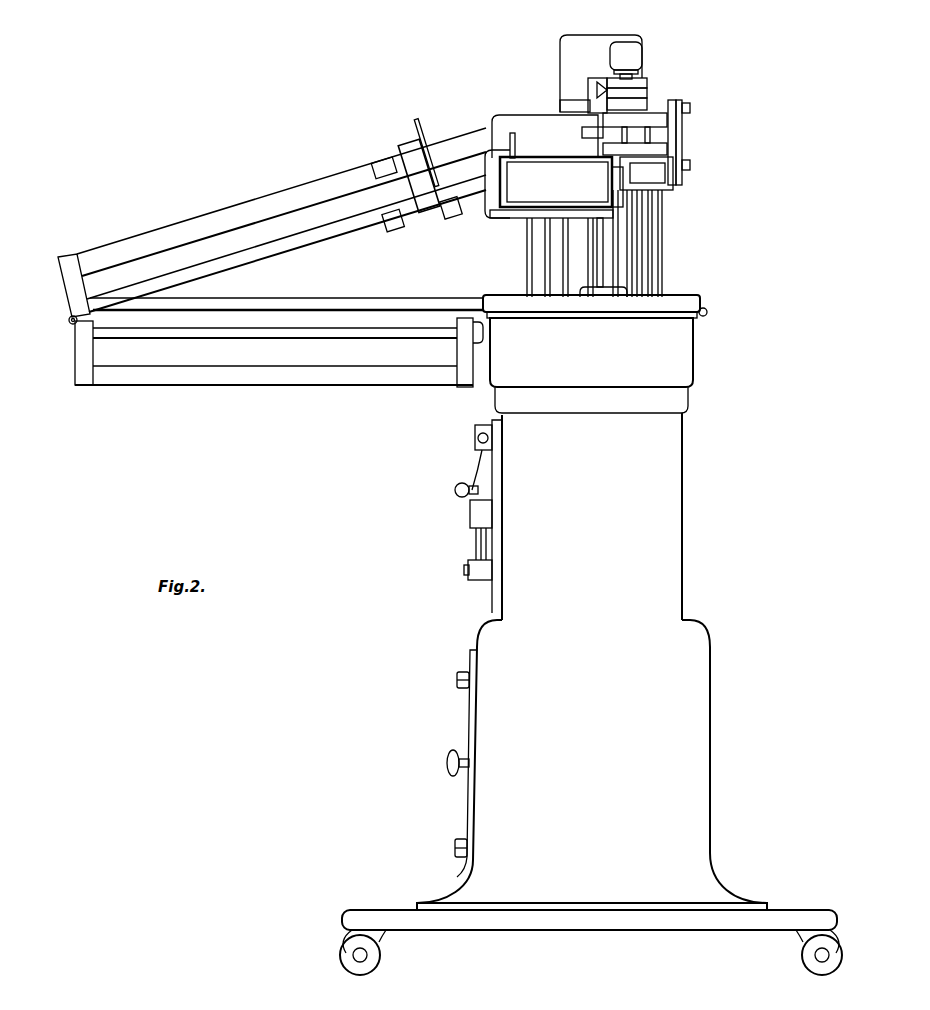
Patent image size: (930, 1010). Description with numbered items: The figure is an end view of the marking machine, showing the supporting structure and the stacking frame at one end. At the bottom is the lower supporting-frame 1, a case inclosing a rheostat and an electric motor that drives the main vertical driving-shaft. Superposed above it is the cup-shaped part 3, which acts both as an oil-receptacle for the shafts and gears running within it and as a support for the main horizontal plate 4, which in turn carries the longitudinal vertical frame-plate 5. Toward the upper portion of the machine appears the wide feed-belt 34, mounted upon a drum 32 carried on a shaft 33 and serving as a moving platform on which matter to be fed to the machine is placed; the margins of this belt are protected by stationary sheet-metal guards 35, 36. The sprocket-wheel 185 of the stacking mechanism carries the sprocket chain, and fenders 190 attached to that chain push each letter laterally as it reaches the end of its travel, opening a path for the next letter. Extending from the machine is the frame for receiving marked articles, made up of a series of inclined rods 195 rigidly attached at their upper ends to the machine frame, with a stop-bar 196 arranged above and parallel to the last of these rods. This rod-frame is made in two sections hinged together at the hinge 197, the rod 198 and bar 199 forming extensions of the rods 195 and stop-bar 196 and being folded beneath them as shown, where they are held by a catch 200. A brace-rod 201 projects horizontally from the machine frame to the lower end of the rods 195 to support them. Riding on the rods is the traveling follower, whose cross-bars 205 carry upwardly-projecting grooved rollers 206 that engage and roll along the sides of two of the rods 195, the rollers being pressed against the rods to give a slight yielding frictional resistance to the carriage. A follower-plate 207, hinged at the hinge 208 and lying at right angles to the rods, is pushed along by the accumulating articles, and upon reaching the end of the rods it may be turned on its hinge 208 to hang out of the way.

The lower supporting-frame 1 is at (591, 694).
The cup-shaped part 3 is at (676, 358).
The main horizontal plate 4 is at (694, 304).
The longitudinal vertical frame-plate 5 is at (605, 278).
The drum 32 is at (499, 196).
The shaft 33 is at (487, 160).
The wide feed-belt 34 is at (561, 182).
The sheet-metal guard 35 is at (600, 146).
The sheet-metal guard 36 is at (516, 148).
The sprocket-wheel 185 is at (645, 108).
The fenders 190 is at (590, 100).
The inclined rods 195 is at (327, 245).
The stop-bar 196 is at (292, 196).
The hinge 197 is at (73, 325).
The rod 198 is at (275, 325).
The bar 199 is at (290, 367).
The catch 200 is at (483, 343).
The brace-rod 201 is at (355, 306).
The cross-bars 205 is at (418, 228).
The grooved rollers 206 is at (392, 234).
The follower-plate 207 is at (427, 143).
The hinge 208 is at (396, 170).